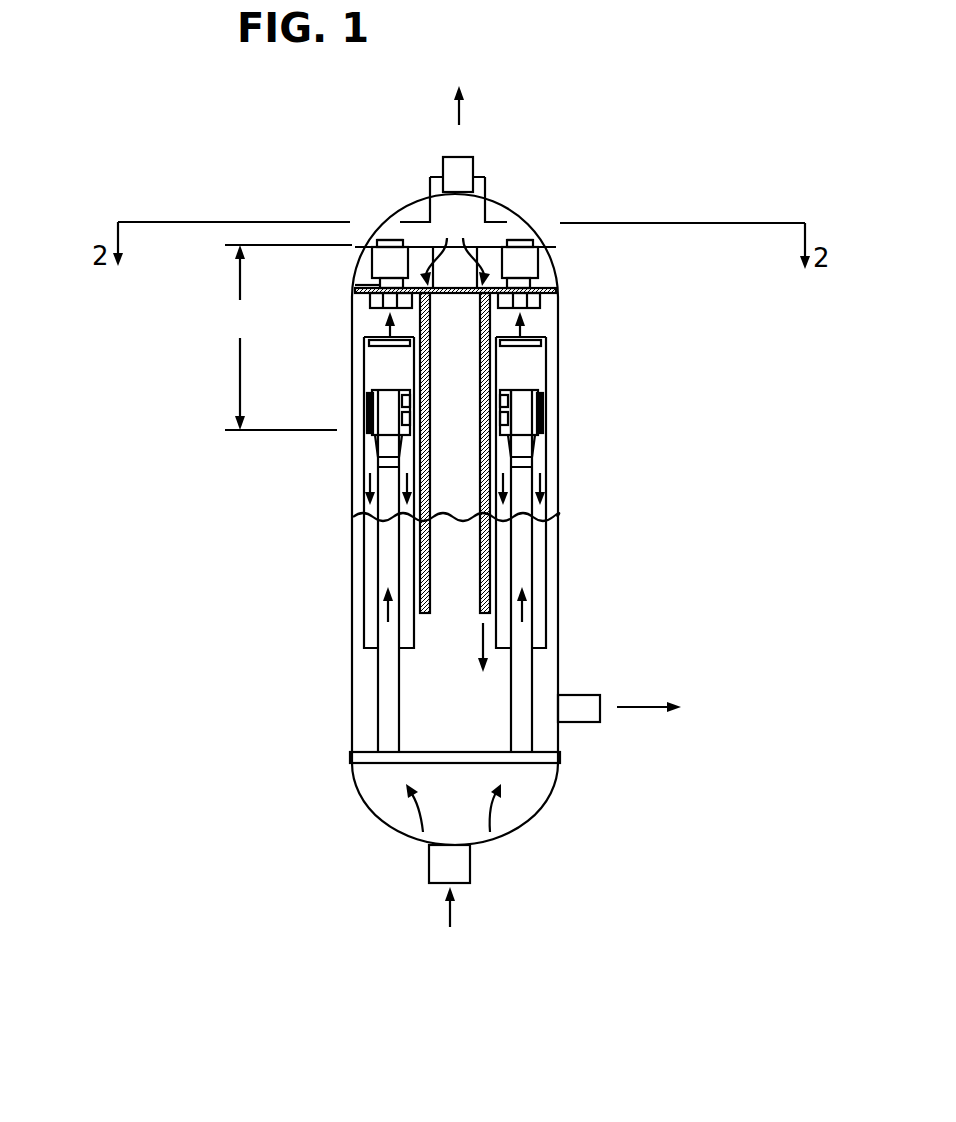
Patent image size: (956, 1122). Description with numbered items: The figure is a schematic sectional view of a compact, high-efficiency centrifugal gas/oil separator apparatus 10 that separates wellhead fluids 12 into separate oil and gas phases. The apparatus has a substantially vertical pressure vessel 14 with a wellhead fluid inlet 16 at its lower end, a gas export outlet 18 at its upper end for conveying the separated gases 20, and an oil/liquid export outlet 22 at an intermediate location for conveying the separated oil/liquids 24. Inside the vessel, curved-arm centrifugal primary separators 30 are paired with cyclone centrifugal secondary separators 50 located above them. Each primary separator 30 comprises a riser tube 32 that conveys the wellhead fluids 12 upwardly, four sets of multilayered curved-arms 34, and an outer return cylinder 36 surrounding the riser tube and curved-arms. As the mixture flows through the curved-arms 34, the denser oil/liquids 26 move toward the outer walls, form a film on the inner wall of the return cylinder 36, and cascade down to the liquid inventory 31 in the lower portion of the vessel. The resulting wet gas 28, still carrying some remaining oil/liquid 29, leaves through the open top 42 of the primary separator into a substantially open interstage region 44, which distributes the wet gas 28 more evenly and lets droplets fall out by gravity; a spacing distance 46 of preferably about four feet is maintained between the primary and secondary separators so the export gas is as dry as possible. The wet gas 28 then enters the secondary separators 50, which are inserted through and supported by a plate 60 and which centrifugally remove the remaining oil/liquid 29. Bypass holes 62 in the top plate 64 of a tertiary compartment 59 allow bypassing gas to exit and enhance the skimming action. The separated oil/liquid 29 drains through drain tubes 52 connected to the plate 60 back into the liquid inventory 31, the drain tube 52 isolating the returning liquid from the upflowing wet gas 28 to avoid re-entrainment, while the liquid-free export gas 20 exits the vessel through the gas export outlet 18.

The gas/oil separator apparatus 10 is at (242, 558).
The wellhead fluids 12 is at (382, 605).
The pressure vessel 14 is at (574, 630).
The wellhead fluid inlet 16 is at (440, 866).
The gas export outlet 18 is at (443, 170).
The separated gases 20 is at (458, 113).
The oil/liquid export outlet 22 is at (583, 710).
The separated oil/liquids 24 is at (645, 708).
The oil/liquids 26 is at (380, 515).
The wet gas 28 is at (382, 320).
The remaining oil/liquid 29 is at (488, 700).
The primary separator 30 is at (530, 424).
The liquid inventory 31 is at (558, 517).
The riser tube 32 is at (380, 708).
The multilayered curved-arms 34 is at (367, 398).
The return cylinder 36 is at (366, 576).
The open top 42 is at (372, 345).
The interstage region 44 is at (556, 318).
The spacing distance 46 is at (287, 337).
The secondary separator 50 is at (542, 263).
The drain tube 52 is at (479, 614).
The tertiary compartment 59 is at (380, 285).
The plate 60 is at (560, 289).
The bypass holes 62 is at (413, 212).
The top plate 64 is at (539, 242).